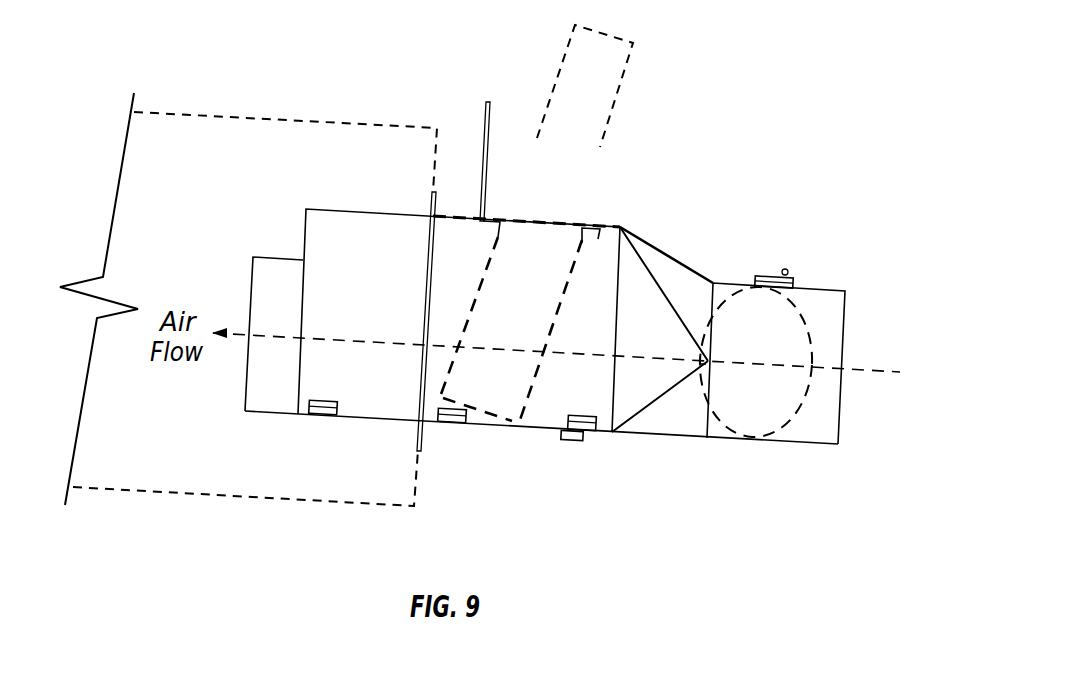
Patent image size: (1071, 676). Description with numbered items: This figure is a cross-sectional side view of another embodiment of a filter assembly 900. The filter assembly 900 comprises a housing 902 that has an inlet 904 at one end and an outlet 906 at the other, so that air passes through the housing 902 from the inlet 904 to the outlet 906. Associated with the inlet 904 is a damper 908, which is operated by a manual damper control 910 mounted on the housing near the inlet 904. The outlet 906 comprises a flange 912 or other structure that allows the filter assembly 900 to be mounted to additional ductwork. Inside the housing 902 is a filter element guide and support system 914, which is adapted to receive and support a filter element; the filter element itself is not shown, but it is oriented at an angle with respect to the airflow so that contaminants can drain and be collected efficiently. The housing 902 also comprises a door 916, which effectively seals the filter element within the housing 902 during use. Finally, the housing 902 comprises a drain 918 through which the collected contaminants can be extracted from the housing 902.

The filter assembly 900 is at (729, 58).
The housing 902 is at (670, 254).
The inlet 904 is at (835, 292).
The outlet 906 is at (467, 225).
The damper 908 is at (805, 392).
The manual damper control 910 is at (775, 276).
The flange 912 is at (437, 205).
The filter element guide and support system 914 is at (542, 363).
The door 916 is at (485, 108).
The drain 918 is at (573, 442).